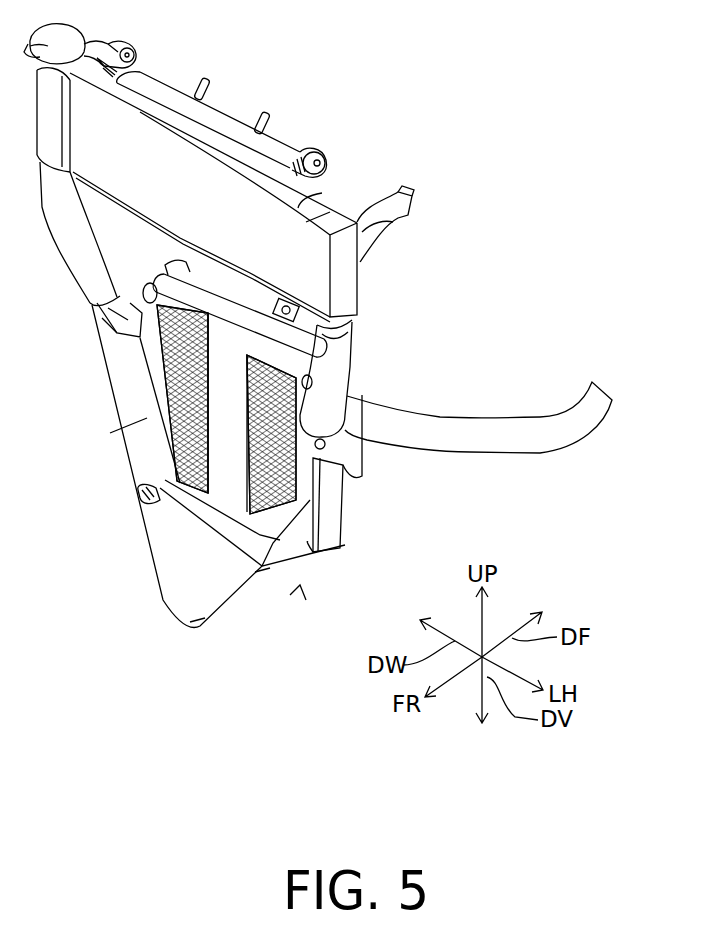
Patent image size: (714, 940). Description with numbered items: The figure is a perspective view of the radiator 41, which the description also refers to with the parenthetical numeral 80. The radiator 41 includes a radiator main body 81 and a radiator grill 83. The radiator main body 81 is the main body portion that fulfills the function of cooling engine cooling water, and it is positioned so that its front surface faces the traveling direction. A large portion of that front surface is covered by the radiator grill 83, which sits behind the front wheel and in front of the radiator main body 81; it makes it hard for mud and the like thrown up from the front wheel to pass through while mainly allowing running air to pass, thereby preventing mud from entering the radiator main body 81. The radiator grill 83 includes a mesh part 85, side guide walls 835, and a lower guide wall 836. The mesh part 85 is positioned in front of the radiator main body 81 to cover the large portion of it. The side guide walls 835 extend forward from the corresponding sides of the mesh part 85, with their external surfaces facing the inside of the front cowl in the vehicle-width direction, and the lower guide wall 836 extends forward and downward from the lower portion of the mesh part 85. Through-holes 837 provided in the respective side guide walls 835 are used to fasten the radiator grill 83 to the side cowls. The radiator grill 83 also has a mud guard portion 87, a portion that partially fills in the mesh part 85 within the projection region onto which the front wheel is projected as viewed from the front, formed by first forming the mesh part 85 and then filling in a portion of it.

The radiator 41 is at (432, 298).
The heat exchanger unit 80 is at (318, 370).
The radiator main body 81 is at (342, 527).
The radiator grill 83 is at (262, 595).
The mesh part 85 is at (187, 500).
The mud guard portion 87 is at (222, 512).
The side guide walls 835 is at (148, 456).
The lower guide wall 836 is at (197, 630).
The through-holes 837 is at (145, 500).